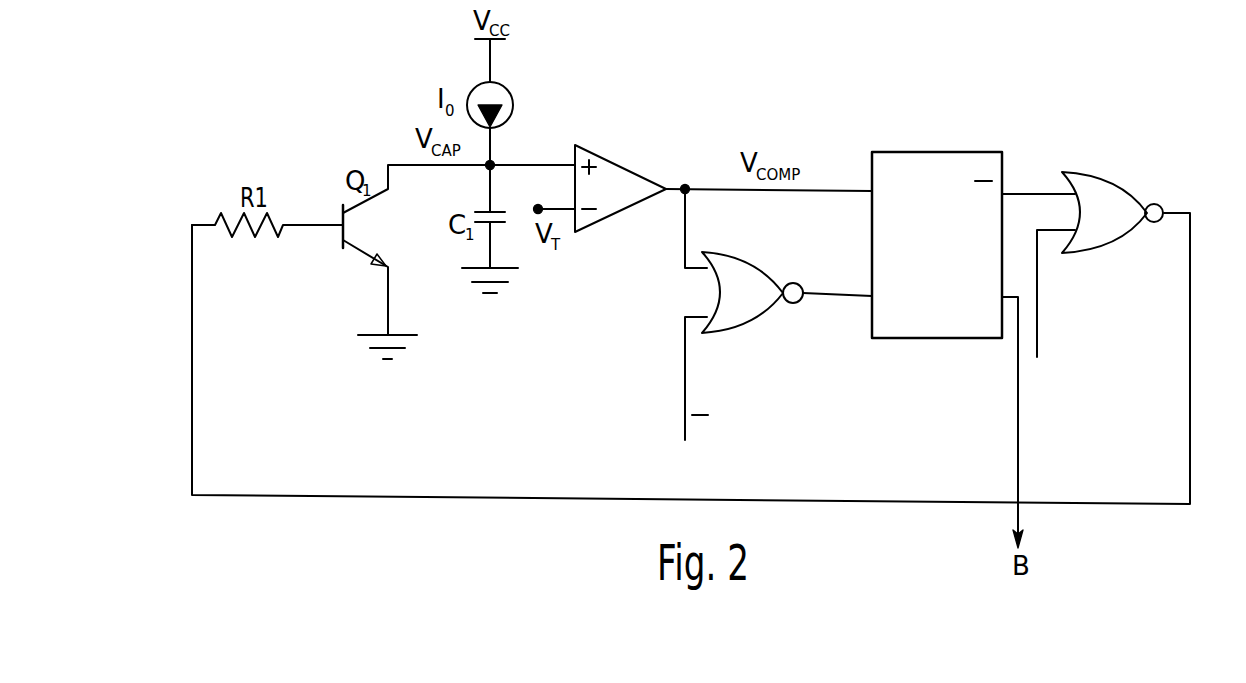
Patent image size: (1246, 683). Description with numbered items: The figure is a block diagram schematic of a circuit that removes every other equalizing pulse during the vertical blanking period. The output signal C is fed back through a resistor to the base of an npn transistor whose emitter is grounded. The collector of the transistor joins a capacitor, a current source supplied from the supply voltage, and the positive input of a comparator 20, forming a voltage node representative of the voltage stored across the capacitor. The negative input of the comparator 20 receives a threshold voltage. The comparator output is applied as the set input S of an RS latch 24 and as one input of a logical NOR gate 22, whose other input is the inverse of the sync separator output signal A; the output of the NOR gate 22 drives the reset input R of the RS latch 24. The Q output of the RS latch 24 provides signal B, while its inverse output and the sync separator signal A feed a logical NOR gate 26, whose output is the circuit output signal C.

The comparator 20 is at (617, 213).
The logical NOR gate 22 is at (745, 258).
The RS latch 24 is at (935, 152).
The logical NOR gate 26 is at (1107, 180).